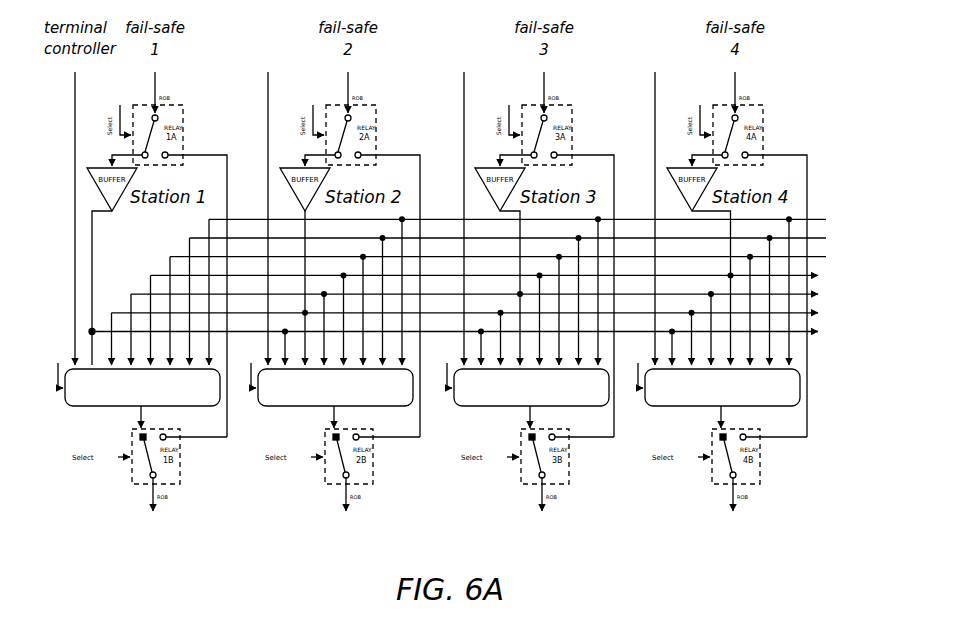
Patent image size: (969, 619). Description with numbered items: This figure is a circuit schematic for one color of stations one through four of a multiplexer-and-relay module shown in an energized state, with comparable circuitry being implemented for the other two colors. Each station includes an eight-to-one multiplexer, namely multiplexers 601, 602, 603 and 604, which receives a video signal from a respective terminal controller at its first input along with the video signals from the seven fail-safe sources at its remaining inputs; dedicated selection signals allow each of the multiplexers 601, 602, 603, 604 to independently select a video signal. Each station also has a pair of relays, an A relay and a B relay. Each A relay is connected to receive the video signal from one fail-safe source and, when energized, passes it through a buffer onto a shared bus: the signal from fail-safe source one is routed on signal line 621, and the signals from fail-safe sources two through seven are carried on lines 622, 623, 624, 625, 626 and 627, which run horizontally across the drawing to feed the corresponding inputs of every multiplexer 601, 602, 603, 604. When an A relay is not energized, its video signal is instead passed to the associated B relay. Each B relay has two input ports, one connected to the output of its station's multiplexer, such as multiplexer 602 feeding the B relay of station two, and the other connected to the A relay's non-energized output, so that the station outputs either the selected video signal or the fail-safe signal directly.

The multiplexer 601 is at (91, 407).
The multiplexer 602 is at (286, 407).
The multiplexer 603 is at (499, 409).
The multiplexer 604 is at (690, 409).
The signal line 621 is at (100, 305).
The line 622 is at (817, 318).
The line 623 is at (817, 299).
The line 624 is at (817, 280).
The line 625 is at (818, 262).
The line 626 is at (818, 243).
The line 627 is at (818, 224).